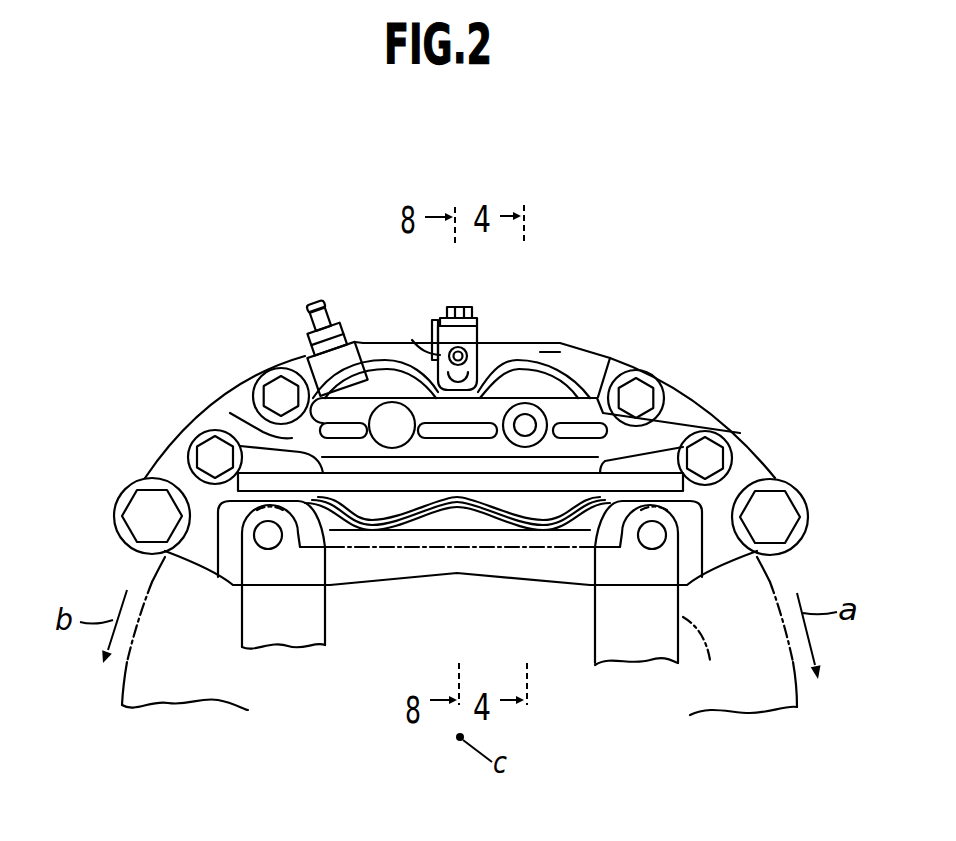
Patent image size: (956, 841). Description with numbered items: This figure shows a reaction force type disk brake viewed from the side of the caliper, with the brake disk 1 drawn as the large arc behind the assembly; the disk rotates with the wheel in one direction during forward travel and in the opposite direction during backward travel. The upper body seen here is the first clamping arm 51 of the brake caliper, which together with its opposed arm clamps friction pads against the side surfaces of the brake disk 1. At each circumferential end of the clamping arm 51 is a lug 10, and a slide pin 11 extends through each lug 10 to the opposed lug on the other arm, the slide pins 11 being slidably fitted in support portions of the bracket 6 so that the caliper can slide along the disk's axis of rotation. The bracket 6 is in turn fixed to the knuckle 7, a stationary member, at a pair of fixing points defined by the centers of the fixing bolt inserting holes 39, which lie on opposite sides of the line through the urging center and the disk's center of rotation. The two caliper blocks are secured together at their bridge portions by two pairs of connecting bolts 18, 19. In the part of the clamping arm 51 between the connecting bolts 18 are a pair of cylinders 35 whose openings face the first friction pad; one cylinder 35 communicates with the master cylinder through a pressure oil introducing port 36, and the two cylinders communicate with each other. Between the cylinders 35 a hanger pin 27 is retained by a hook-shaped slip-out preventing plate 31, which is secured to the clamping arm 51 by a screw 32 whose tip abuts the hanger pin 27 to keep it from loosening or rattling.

The brake disk 1 is at (770, 588).
The first clamping arm 51 is at (540, 352).
The bracket 6 is at (360, 327).
The knuckle 7 is at (479, 603).
The lug 10 is at (130, 483).
The slide pin 11 is at (153, 518).
The connecting bolt 18 is at (280, 395).
The connecting bolt 19 is at (210, 450).
The hanger pin 27 is at (412, 340).
The slip-out preventing plate 31 is at (476, 328).
The screw 32 is at (457, 305).
The cylinder 35 is at (508, 508).
The pressure oil introducing port 36 is at (528, 423).
The fixing bolt inserting hole 39 is at (270, 542).